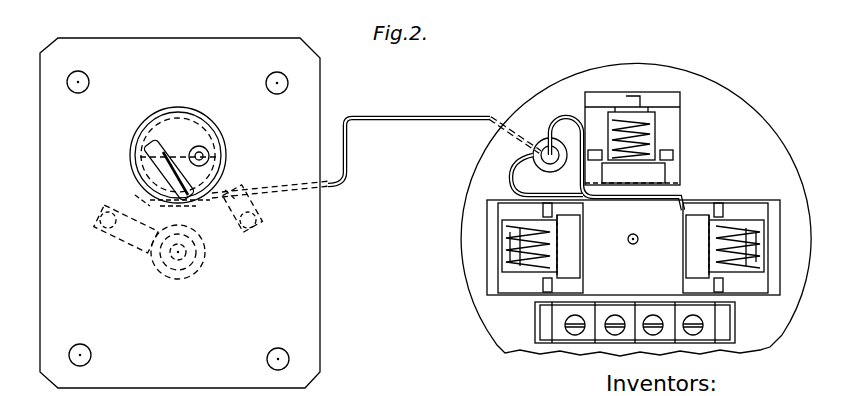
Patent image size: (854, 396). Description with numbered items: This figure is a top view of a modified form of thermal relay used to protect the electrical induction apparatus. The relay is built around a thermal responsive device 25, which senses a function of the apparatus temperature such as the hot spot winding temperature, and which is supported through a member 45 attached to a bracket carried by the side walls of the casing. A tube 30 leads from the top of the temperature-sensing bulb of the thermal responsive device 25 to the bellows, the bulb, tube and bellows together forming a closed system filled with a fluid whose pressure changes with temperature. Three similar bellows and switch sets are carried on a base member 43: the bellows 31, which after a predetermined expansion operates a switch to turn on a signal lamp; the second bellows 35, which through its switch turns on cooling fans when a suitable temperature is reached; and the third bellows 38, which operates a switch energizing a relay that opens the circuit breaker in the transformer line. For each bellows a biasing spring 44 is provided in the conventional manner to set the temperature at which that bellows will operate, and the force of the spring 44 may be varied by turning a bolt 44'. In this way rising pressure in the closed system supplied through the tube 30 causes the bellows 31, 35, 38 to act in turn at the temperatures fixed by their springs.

The supporting member 45 is at (176, 40).
The thermal responsive device 25 is at (150, 200).
The tube 30 is at (466, 112).
The base member 43 is at (622, 62).
The bolt 44' is at (632, 126).
The biasing spring 44 is at (658, 138).
The bellows 31 is at (670, 183).
The second bellows 35 is at (583, 282).
The third bellows 38 is at (683, 283).